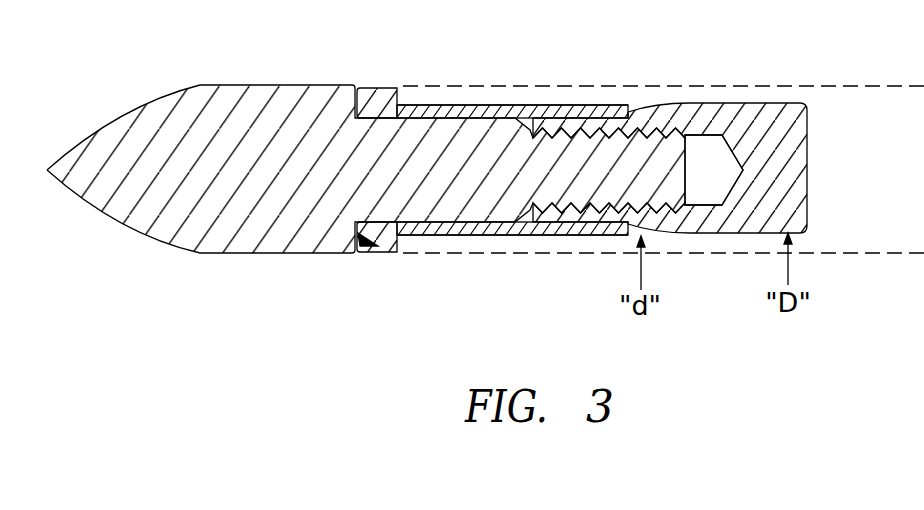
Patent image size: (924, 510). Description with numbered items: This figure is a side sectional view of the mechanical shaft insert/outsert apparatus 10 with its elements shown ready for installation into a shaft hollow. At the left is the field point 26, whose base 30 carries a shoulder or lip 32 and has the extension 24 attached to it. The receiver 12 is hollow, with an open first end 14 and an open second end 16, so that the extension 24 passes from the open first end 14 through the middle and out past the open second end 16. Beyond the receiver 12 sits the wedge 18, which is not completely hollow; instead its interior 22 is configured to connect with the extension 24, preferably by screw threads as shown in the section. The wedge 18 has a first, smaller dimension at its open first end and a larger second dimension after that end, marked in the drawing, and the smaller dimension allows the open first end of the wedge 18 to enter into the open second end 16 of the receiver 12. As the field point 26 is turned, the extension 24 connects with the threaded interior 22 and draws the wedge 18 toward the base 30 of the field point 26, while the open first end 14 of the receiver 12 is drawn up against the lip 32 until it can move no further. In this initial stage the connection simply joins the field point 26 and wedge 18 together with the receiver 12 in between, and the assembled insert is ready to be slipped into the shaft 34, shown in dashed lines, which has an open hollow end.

The mechanical shaft insert/outsert apparatus and method 10 is at (672, 252).
The receiver 12 is at (478, 107).
The open first end 14 is at (377, 88).
The open second end 16 is at (600, 105).
The wedge 18 is at (793, 172).
The interior 22 is at (713, 105).
The extension 24 is at (630, 157).
The field point 26 is at (220, 232).
The base 30 is at (283, 103).
The shoulder or lip 32 is at (383, 250).
The shaft 34 is at (922, 251).